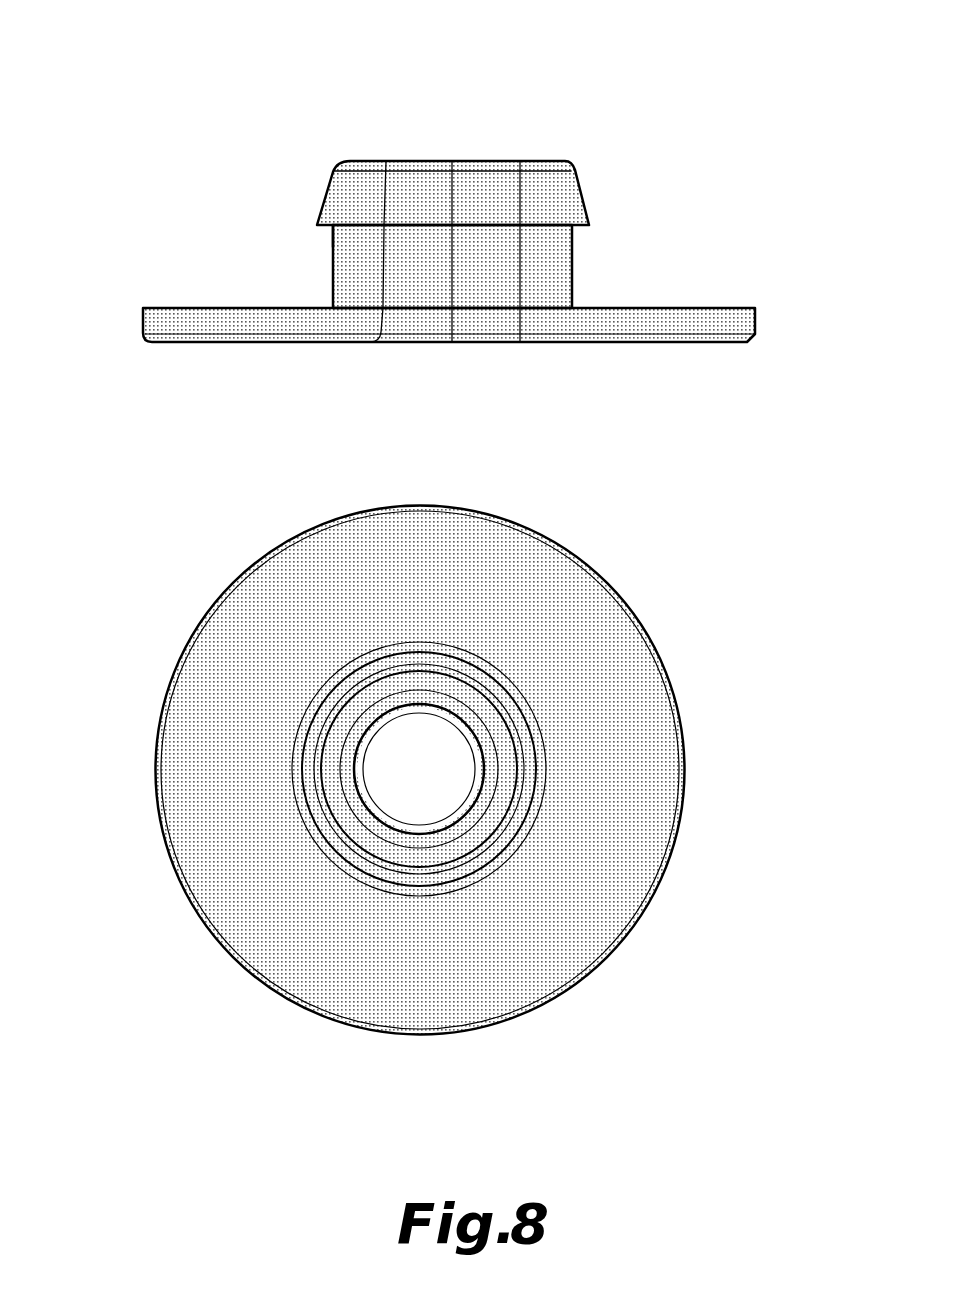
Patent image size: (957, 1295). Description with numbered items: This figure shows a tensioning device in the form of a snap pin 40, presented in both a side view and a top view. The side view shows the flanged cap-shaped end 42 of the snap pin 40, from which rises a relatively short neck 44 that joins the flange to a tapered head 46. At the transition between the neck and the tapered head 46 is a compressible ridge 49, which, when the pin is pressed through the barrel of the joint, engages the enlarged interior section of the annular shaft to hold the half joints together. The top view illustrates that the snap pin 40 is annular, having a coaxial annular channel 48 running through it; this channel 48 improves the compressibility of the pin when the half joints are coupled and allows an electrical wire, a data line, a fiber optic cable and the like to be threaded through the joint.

The snap pin 40 is at (150, 114).
The flanged cap-shaped end 42 is at (685, 317).
The stem 44 is at (553, 270).
The tapered head 46 is at (540, 192).
The annular channel 48 is at (417, 772).
The compressible ridge 49 is at (343, 228).